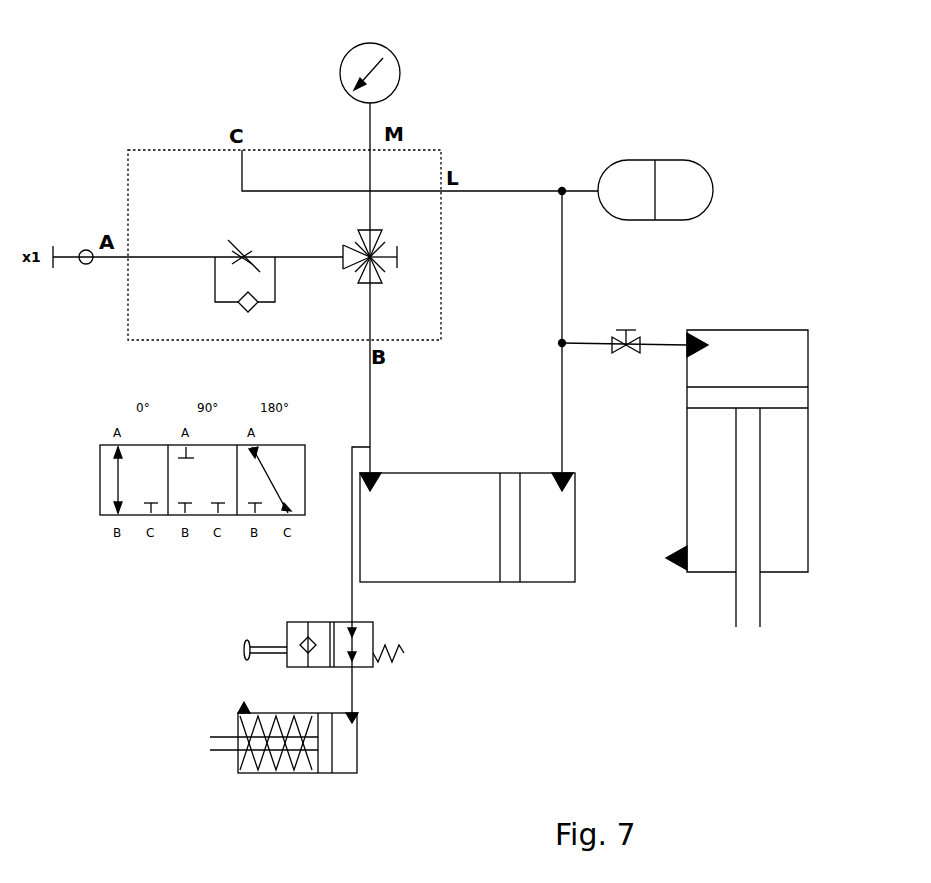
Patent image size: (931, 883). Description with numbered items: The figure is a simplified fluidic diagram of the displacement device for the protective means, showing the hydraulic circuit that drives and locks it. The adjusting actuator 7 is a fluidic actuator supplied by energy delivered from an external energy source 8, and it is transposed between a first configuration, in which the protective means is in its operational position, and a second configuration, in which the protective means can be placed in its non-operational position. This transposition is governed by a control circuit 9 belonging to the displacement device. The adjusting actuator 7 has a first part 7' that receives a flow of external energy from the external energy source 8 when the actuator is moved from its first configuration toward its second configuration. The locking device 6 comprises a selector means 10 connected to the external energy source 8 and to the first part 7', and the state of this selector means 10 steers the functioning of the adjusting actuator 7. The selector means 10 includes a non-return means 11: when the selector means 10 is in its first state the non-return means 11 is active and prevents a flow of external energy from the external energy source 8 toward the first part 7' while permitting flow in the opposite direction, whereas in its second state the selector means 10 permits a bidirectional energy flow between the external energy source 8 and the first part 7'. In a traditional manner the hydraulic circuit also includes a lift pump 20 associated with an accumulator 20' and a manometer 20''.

The locking device 6 is at (215, 768).
The adjusting actuator 7 is at (236, 774).
The first part 7' is at (352, 780).
The external energy source 8 is at (52, 284).
The control circuit 9 is at (205, 728).
The selector means 10 is at (215, 768).
The non-return means 11 is at (298, 632).
The lift pump 20 is at (467, 497).
The accumulator 20' is at (667, 167).
The manometer 20'' is at (410, 71).